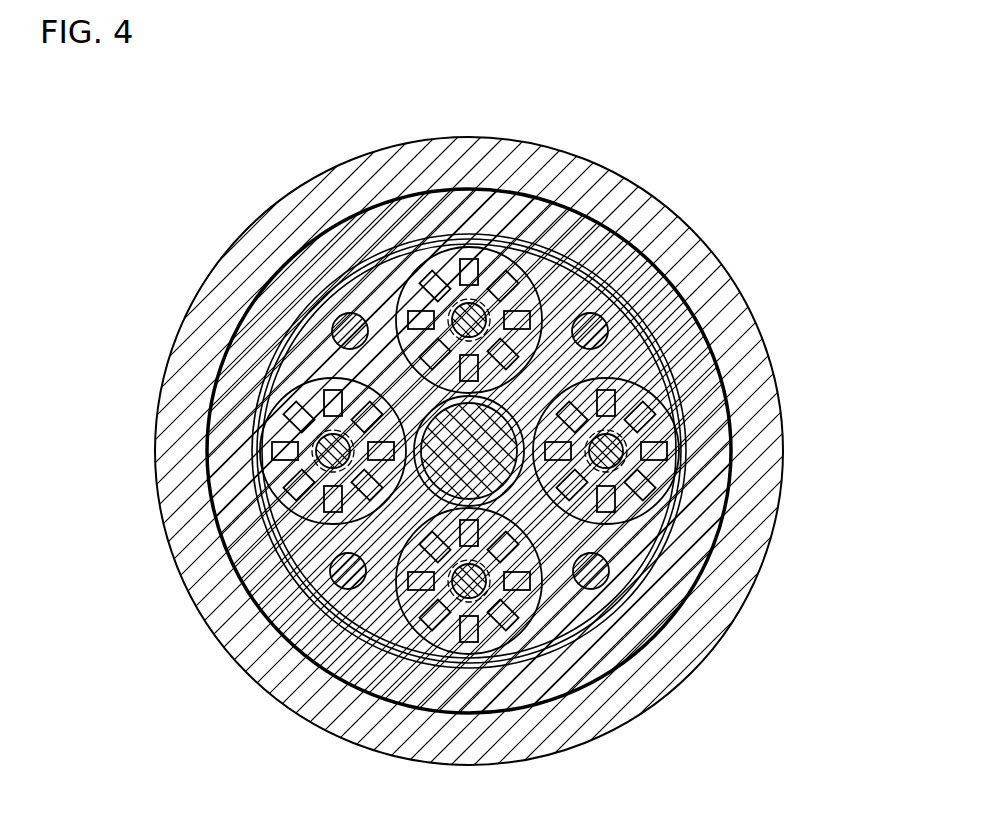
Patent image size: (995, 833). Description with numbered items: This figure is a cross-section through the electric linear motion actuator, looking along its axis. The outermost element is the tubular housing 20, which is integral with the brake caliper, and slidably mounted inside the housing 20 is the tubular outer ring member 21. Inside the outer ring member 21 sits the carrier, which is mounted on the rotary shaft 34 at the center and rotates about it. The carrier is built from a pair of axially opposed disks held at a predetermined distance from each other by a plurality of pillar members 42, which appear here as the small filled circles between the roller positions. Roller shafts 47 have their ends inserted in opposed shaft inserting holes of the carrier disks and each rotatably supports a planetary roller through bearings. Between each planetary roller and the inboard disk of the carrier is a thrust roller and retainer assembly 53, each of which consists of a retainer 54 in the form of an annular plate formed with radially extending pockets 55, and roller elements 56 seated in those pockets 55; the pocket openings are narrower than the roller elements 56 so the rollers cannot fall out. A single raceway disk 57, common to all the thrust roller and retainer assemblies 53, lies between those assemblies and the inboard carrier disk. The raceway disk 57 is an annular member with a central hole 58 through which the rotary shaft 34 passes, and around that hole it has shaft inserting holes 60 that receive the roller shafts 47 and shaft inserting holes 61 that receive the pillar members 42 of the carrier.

The housing 20 is at (333, 180).
The outer ring member 21 is at (398, 205).
The rotary shaft 34 is at (437, 430).
The pillar members 42 is at (334, 322).
The roller shafts 47 is at (475, 303).
The thrust roller and retainer assembly 53 is at (440, 248).
The retainer 54 is at (525, 318).
The pockets 55 is at (650, 452).
The roller elements 56 is at (507, 280).
The raceway disk 57 is at (303, 357).
The central hole 58 is at (279, 356).
The shaft inserting holes 60 is at (311, 462).
The shaft inserting holes 61 is at (250, 262).